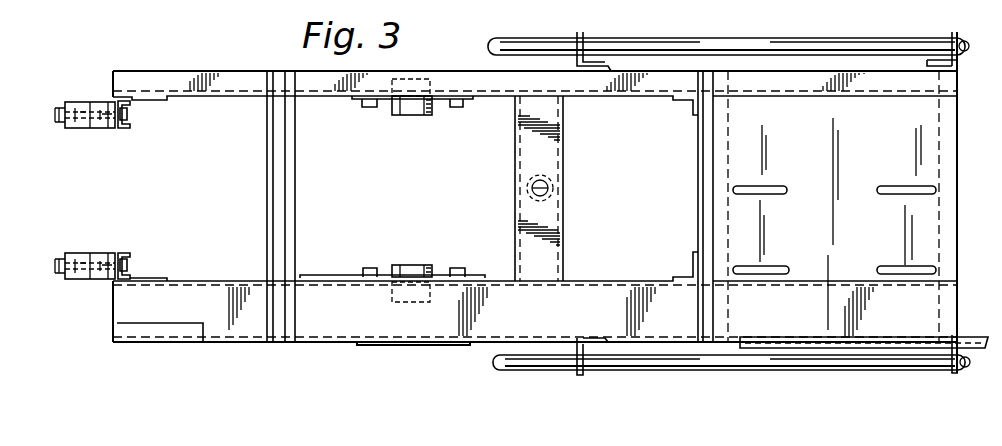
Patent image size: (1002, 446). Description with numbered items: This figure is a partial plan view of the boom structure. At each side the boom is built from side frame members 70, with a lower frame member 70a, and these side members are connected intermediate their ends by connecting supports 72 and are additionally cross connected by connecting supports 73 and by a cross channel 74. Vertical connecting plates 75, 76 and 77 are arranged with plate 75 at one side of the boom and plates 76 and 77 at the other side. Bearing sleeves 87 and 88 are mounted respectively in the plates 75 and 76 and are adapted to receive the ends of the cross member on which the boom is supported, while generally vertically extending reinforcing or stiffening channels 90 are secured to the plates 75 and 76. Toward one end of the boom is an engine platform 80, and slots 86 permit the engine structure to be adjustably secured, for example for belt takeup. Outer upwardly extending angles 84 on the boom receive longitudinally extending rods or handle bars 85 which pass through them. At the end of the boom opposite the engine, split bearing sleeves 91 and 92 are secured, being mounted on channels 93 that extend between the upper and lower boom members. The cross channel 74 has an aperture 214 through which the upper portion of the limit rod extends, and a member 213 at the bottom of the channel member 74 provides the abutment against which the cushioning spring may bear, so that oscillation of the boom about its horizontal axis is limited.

The side frame member 70 is at (205, 78).
The lower frame member 70a is at (204, 282).
The connecting support 72 is at (297, 188).
The connecting support 73 is at (284, 228).
The cross channel 74 is at (564, 148).
The vertical connecting plate 75 is at (466, 99).
The vertical connecting plate 76 is at (476, 275).
The vertical connecting plate 77 is at (427, 346).
The engine platform 80 is at (947, 148).
The outer upwardly extending angle 84 is at (582, 32).
The rod or handle bar 85 is at (779, 43).
The slot 86 is at (771, 185).
The bearing sleeve 87 is at (414, 115).
The bearing sleeve 88 is at (402, 265).
The reinforcing channel 90 is at (376, 108).
The split bearing sleeve 91 is at (83, 101).
The split bearing sleeve 92 is at (81, 253).
The channel 93 is at (123, 128).
The member 213 is at (556, 195).
The aperture 214 is at (549, 184).